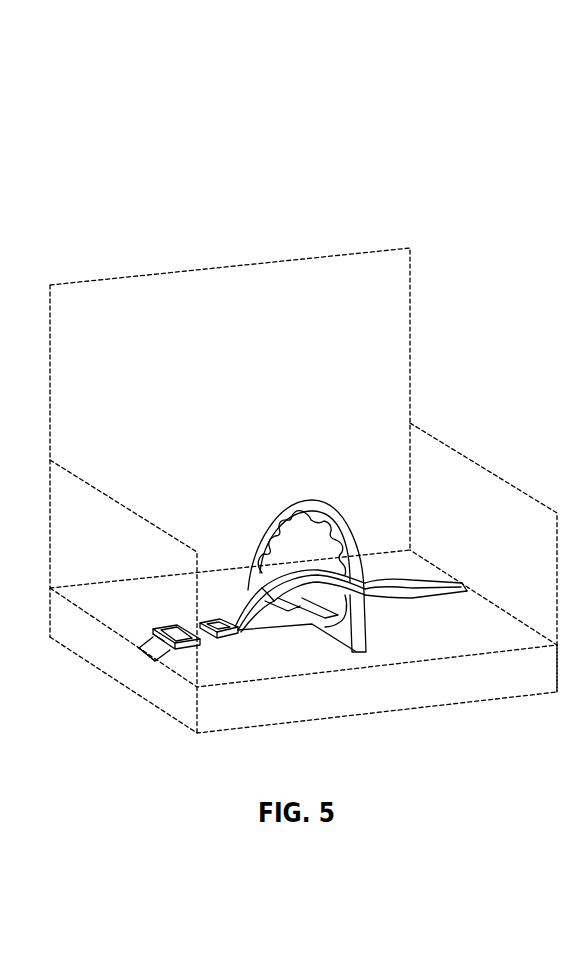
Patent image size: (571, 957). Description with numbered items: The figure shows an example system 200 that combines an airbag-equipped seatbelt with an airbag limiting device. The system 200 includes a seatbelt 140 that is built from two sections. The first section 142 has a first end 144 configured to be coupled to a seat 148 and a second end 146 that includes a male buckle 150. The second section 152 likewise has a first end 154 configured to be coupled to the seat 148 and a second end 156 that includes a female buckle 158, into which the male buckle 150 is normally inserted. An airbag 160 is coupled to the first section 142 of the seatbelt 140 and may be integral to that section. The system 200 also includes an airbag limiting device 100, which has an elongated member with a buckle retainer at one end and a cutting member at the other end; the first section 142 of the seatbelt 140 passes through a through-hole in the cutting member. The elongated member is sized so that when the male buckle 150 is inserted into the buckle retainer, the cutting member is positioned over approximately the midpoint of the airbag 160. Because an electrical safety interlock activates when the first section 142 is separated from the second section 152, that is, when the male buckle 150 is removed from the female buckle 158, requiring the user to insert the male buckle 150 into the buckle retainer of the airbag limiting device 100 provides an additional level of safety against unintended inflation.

The system 200 is at (162, 245).
The airbag limiting device 100 is at (268, 508).
The airbag 160 is at (315, 578).
The first section 142 is at (410, 577).
The seat 148 is at (367, 358).
The first end 144 is at (460, 577).
The seatbelt 140 is at (268, 606).
The male buckle 150 is at (238, 631).
The second end 146 is at (217, 652).
The second end 156 is at (178, 624).
The female buckle 158 is at (165, 636).
The second section 152 is at (137, 634).
The first end 154 is at (137, 658).